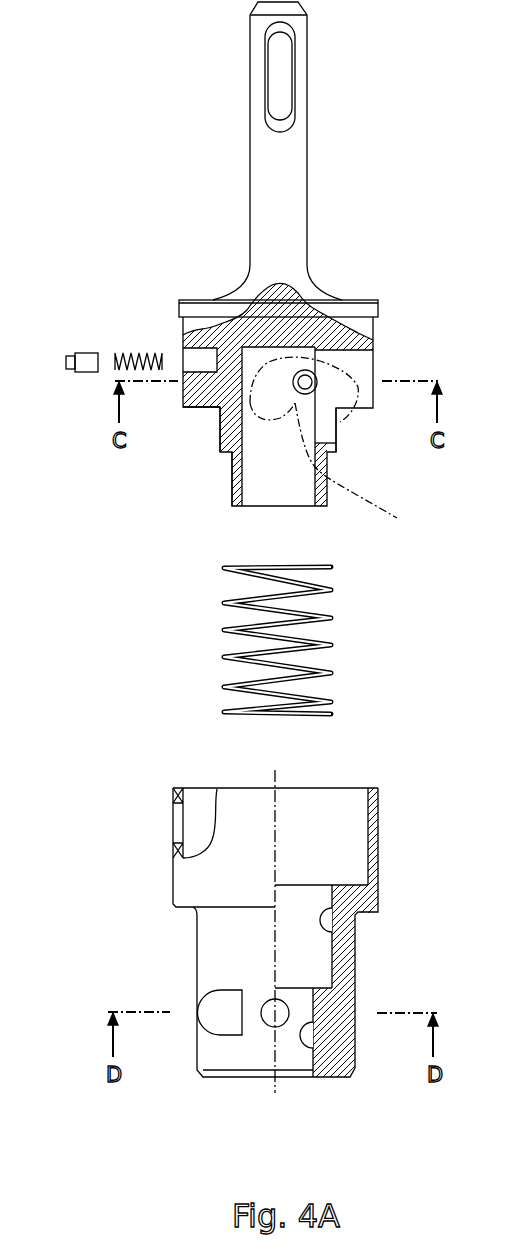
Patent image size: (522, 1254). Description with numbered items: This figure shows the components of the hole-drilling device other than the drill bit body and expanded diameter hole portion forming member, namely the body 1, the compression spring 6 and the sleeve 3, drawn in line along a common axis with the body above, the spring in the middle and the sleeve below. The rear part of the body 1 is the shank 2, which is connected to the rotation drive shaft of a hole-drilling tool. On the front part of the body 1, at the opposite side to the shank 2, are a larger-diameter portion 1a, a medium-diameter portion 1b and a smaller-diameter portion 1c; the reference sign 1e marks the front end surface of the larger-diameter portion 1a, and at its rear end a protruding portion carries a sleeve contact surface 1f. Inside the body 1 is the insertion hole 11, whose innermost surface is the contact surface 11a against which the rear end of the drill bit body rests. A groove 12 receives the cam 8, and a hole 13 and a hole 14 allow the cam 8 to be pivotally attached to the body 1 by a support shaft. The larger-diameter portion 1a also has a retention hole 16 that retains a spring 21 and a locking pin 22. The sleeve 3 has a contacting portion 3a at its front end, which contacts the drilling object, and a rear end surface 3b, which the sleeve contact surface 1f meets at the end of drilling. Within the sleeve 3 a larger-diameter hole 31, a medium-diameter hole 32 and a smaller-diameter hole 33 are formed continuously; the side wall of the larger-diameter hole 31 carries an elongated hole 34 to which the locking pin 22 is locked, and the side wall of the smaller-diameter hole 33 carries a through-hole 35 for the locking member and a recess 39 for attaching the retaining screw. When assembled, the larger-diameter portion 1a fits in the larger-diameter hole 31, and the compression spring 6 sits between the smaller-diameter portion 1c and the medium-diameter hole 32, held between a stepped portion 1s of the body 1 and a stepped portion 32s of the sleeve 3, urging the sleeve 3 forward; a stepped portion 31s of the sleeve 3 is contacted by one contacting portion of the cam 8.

The body 1 is at (235, 212).
The larger-diameter portion 1a is at (374, 342).
The medium-diameter portion 1b is at (221, 434).
The smaller-diameter portion 1c is at (236, 481).
The front end surface 1e is at (197, 410).
The sleeve contact surface 1f is at (378, 321).
The stepped portion 1s is at (330, 452).
The shank 2 is at (307, 100).
The sleeve 3 is at (167, 886).
The contacting portion 3a is at (217, 1078).
The rear end surface 3b is at (379, 790).
The compression spring 6 is at (330, 618).
The cam 8 is at (354, 469).
The insertion hole 11 is at (290, 485).
The contact surface 11a is at (287, 343).
The groove 12 is at (373, 372).
The hole 13 is at (350, 421).
The hole 14 is at (341, 437).
The retention hole 16 is at (182, 361).
The spring 21 is at (126, 352).
The locking pin 22 is at (86, 352).
The larger-diameter hole 31 is at (367, 808).
The stepped portion 31s is at (343, 883).
The medium-diameter hole 32 is at (334, 933).
The stepped portion 32s is at (331, 975).
The smaller-diameter hole 33 is at (351, 1073).
The elongated hole 34 is at (175, 823).
The through-hole 35 is at (266, 1025).
The recess 39 is at (223, 1036).